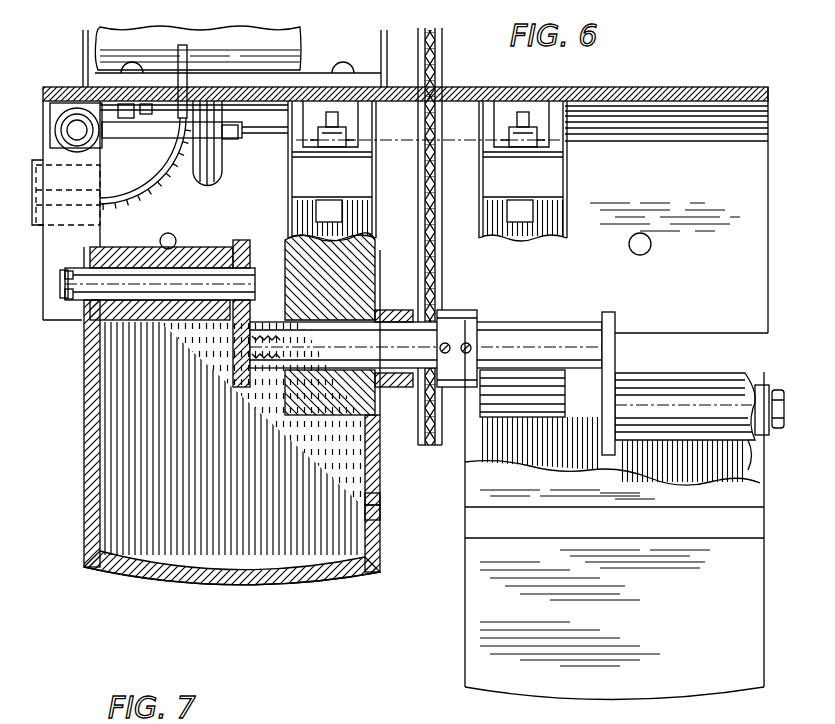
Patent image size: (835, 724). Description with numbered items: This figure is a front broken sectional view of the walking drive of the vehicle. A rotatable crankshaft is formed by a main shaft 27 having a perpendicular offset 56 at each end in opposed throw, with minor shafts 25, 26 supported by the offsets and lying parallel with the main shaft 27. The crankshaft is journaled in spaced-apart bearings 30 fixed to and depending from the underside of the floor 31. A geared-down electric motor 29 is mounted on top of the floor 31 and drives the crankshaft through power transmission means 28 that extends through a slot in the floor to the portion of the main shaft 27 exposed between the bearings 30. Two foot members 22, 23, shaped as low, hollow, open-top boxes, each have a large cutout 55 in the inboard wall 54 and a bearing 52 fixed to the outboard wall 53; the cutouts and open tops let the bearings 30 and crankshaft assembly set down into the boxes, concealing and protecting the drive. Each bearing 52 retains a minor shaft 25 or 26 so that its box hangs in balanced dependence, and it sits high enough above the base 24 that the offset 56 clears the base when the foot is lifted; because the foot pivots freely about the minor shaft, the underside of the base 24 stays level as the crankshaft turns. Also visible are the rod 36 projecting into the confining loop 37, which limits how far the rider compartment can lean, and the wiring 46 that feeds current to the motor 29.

In FIG. 6, the foot member 22 is at (194, 491).
In FIG. 6, the foot member 23 is at (533, 603).
In FIG. 6, the base 24 is at (228, 585).
In FIG. 6, the minor shaft 25 is at (70, 282).
In FIG. 6, the minor shaft 26 is at (781, 400).
In FIG. 7, the minor shaft 26 is at (314, 711).
In FIG. 6, the main shaft 27 is at (270, 372).
In FIG. 6, the power transmission means 28 is at (443, 60).
In FIG. 6, the geared down electric motor 29 is at (296, 57).
In FIG. 6, the bearings 30 is at (427, 171).
In FIG. 6, the floor 31 is at (612, 92).
In FIG. 6, the rod 36 is at (116, 138).
In FIG. 6, the confining loop 37 is at (224, 160).
In FIG. 6, the wiring 46 is at (137, 200).
In FIG. 6, the bearing 52 is at (185, 252).
In FIG. 6, the outboard wall 53 is at (92, 250).
In FIG. 6, the inboard wall 54 is at (380, 543).
In FIG. 6, the cutout 55 is at (470, 428).
In FIG. 6, the offset 56 is at (618, 320).